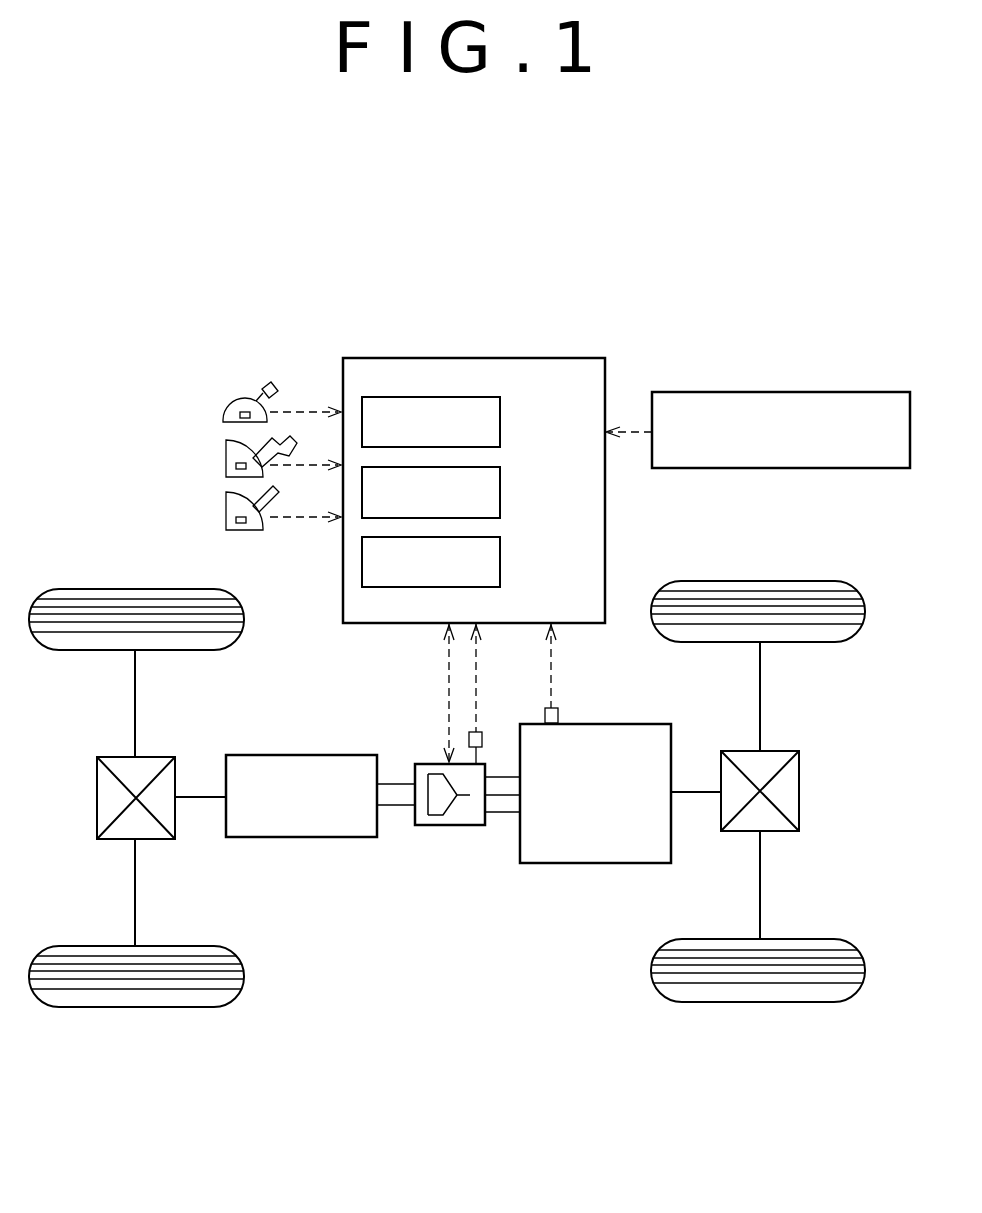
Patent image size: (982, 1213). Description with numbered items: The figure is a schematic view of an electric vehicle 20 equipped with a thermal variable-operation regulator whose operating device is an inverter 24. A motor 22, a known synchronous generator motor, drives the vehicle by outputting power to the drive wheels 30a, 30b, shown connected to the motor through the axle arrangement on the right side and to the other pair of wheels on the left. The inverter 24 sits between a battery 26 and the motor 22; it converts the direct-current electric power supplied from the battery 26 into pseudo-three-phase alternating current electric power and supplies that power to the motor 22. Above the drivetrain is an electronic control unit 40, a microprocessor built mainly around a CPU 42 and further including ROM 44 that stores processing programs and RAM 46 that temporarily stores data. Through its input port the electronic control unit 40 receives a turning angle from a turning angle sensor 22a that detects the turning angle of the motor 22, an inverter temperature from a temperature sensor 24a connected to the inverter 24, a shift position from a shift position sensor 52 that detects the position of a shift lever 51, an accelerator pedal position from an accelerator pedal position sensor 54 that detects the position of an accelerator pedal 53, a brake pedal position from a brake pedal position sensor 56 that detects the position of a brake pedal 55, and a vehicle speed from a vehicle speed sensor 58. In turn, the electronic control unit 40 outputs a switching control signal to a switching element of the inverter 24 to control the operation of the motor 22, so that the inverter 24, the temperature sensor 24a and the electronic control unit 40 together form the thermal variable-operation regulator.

The electric vehicle 20 is at (719, 354).
The motor 22 is at (597, 865).
The turning angle sensor 22a is at (558, 717).
The inverter 24 is at (450, 825).
The temperature sensor 24a is at (483, 739).
The battery 26 is at (300, 837).
The drive wheel 30a is at (759, 577).
The drive wheel 30b is at (759, 1002).
The electronic control unit 40 is at (522, 358).
The CPU 42 is at (500, 420).
The ROM 44 is at (500, 490).
The RAM 46 is at (500, 560).
The shift lever 51 is at (262, 391).
The shift position sensor 52 is at (223, 412).
The accelerator pedal 53 is at (255, 440).
The accelerator pedal position sensor 54 is at (227, 465).
The brake pedal 55 is at (257, 491).
The brake pedal position sensor 56 is at (227, 517).
The vehicle speed sensor 58 is at (863, 392).